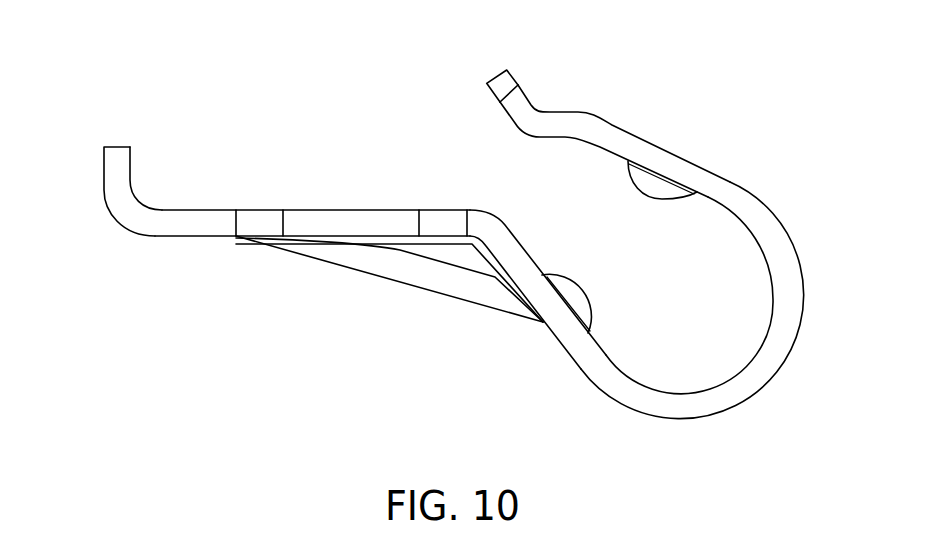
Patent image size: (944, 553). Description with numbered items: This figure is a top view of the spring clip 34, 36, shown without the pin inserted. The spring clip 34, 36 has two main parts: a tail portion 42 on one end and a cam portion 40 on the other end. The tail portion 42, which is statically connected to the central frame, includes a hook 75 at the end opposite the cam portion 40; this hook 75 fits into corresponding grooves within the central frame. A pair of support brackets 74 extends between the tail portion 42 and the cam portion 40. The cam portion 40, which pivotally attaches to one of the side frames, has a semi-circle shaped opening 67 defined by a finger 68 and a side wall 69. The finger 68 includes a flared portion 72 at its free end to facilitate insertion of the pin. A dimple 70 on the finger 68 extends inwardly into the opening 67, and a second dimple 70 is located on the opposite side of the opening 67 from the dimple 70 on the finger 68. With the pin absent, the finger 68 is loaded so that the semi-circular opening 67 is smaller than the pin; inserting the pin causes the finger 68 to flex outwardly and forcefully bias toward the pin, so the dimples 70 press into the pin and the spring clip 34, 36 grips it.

The first spring clip 34 is at (231, 91).
The second spring clip 36 is at (449, 234).
The cam portion 40 is at (777, 322).
The tail portion 42 is at (176, 237).
The semi-circle shaped opening 67 is at (508, 167).
The finger 68 is at (695, 173).
The side wall 69 is at (612, 387).
The dimple 70 is at (578, 298).
The flared portion 72 is at (508, 78).
The support bracket 74 is at (413, 272).
The hook 75 is at (118, 163).